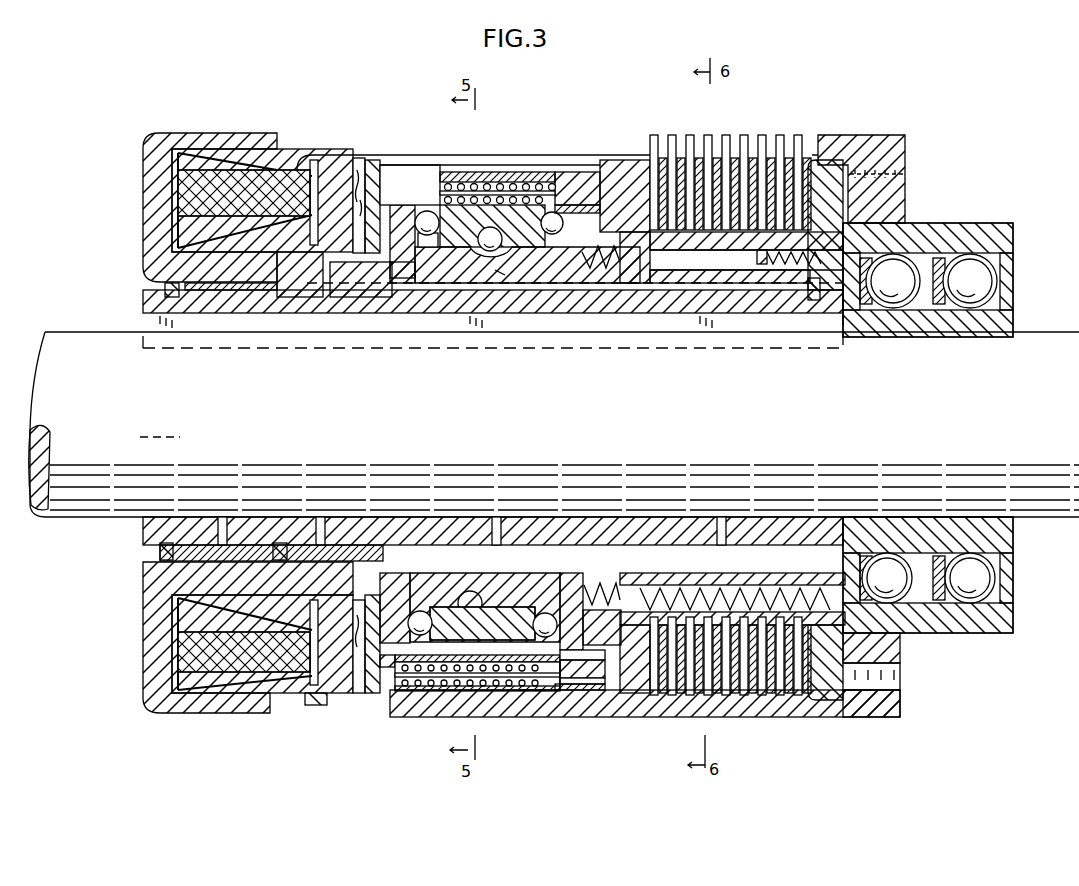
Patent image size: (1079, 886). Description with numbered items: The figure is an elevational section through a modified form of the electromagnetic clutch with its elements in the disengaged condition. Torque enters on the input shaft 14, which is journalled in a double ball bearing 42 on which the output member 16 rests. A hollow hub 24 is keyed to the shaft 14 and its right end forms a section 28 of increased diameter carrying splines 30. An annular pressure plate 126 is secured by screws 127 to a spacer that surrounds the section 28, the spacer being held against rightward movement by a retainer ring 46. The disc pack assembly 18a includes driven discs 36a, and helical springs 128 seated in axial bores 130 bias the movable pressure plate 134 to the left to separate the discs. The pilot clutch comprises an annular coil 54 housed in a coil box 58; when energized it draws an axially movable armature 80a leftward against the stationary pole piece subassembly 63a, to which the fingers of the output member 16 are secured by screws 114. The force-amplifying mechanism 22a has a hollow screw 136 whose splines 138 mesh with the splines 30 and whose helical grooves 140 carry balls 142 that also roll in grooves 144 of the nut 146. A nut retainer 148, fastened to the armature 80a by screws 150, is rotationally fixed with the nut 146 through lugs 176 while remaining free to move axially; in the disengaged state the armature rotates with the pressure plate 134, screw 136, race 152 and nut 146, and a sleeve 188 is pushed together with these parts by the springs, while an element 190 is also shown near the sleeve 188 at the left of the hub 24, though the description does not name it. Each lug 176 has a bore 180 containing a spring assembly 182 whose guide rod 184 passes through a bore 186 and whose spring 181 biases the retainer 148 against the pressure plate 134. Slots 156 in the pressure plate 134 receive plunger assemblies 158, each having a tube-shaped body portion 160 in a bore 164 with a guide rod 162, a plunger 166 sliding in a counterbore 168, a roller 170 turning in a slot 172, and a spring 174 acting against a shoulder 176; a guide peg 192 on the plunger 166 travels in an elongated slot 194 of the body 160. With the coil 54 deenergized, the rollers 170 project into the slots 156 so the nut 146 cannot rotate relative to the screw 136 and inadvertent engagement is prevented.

The shaft 14 is at (77, 378).
The output member 16 is at (905, 143).
The disc pack assembly 18a is at (690, 152).
The force-amplifying mechanism 22a is at (546, 156).
The hub 24 is at (152, 315).
The section 28 is at (565, 300).
The splines 30 is at (600, 270).
The driven discs 36a is at (750, 150).
The double ball bearing 42 is at (1010, 230).
The retainer ring 46 is at (815, 300).
The coil 54 is at (256, 198).
The coil box 58 is at (143, 160).
The pole piece subassembly 63a is at (238, 149).
The armature 80a is at (371, 185).
The screws 114 is at (316, 705).
The pressure plate 126 is at (825, 196).
The screws 127 is at (842, 238).
The helical springs 128 is at (635, 290).
The axial bore 130 is at (697, 290).
The pressure plate 134 is at (615, 165).
The screw 136 is at (505, 275).
The splines 138 is at (447, 290).
The helical grooves 140 is at (466, 250).
The balls 142 is at (470, 590).
The grooves 144 is at (484, 607).
The nut 146 is at (444, 227).
The nut retainer 148 is at (400, 188).
The screws 150 is at (356, 165).
The race 152 is at (402, 290).
The slots 156 is at (576, 684).
The plunger assembly 158 is at (531, 693).
The body portion 160 is at (420, 668).
The guide rod 162 is at (441, 680).
The bore 164 is at (388, 668).
The plunger 166 is at (490, 692).
The counterbore 168 is at (566, 690).
The roller 170 is at (592, 682).
The slot 172 is at (562, 657).
The spring 174 is at (478, 678).
The lugs 176 is at (522, 195).
The bore 180 is at (462, 174).
The spring 181 is at (508, 232).
The spring assembly 182 is at (560, 200).
The guide rod 184 is at (496, 183).
The bore 186 is at (447, 190).
The sleeve 188 is at (312, 297).
The pin 190 is at (276, 297).
The guide peg 192 is at (556, 692).
The elongated slot 194 is at (534, 695).